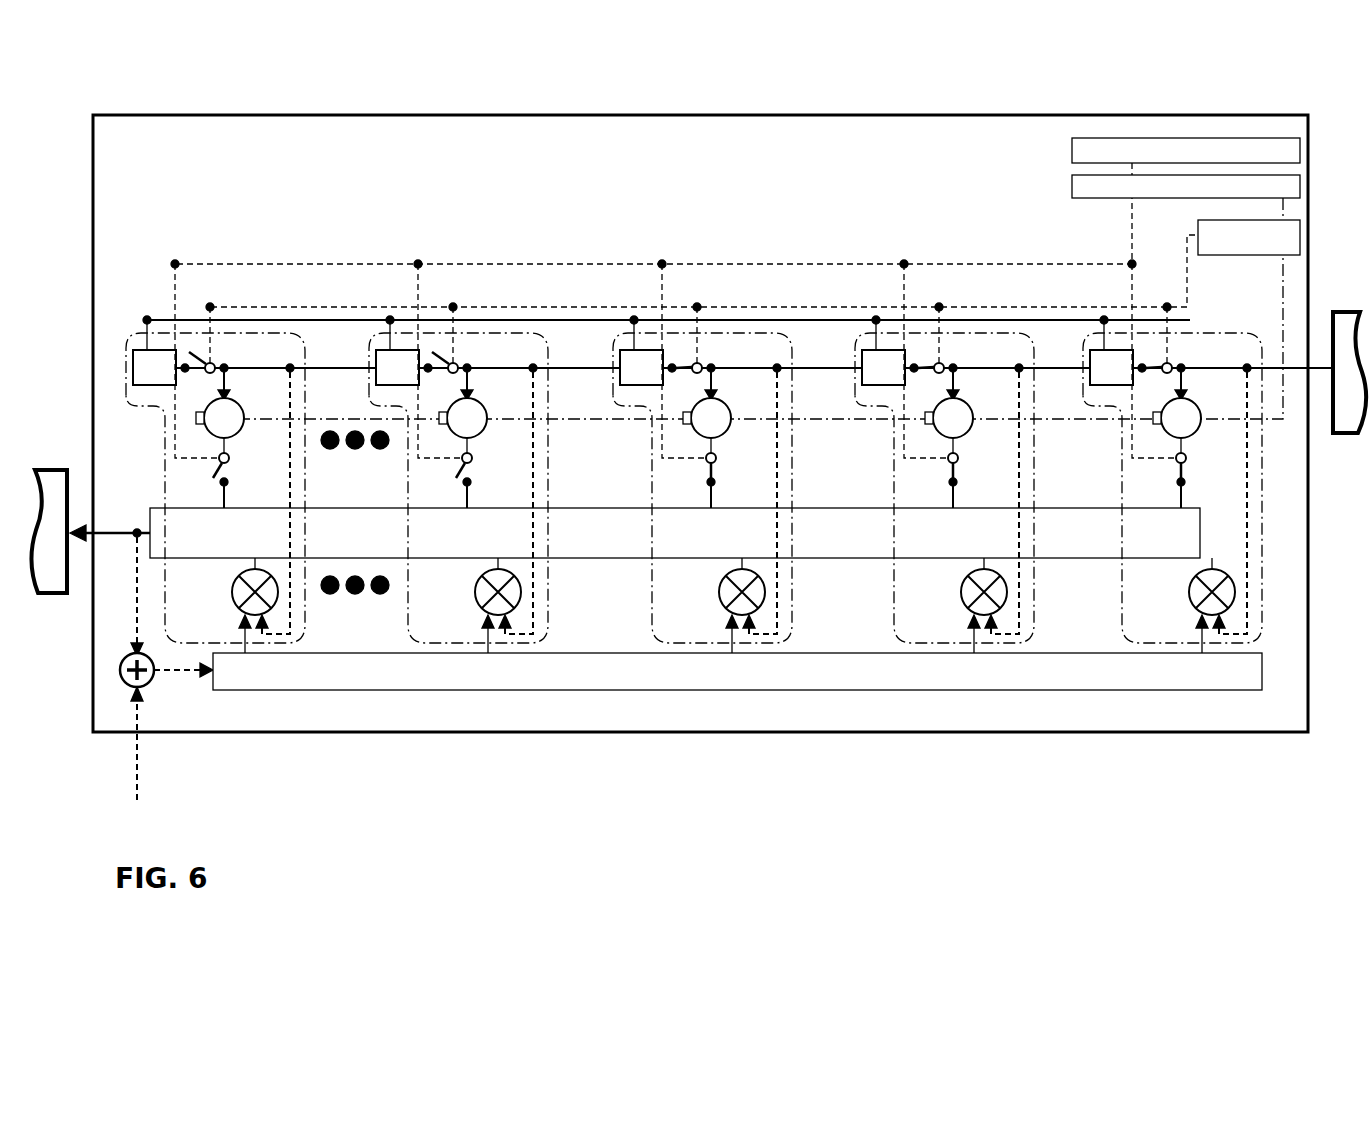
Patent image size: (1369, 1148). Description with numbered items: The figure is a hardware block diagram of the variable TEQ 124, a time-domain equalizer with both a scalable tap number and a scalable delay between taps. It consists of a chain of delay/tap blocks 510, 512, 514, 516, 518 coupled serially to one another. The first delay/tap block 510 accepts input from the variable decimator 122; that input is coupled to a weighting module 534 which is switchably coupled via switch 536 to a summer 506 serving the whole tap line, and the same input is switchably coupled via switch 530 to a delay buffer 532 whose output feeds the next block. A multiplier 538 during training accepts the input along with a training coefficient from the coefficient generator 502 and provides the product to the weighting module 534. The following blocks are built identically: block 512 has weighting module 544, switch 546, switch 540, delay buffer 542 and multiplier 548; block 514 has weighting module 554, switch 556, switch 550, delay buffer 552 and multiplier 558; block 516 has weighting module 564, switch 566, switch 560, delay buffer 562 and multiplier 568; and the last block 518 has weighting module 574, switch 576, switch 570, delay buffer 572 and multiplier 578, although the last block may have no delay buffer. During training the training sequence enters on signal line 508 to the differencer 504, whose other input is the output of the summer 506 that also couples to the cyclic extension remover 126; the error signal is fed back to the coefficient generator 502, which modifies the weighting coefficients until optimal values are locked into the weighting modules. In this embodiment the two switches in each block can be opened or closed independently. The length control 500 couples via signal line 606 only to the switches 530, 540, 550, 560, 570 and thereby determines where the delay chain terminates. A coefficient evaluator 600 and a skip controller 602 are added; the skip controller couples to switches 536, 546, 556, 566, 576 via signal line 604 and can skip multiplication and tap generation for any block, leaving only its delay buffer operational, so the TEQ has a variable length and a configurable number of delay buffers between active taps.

The variable decimator 122 is at (1345, 436).
The variable TEQ 124 is at (93, 150).
The cyclic extension remover 126 is at (45, 597).
The length control module 500 is at (1198, 228).
The coefficient generator 502 is at (480, 690).
The differencer 504 is at (125, 655).
The summer 506 is at (150, 512).
The signal line 508 is at (145, 742).
The delay/tap block 510 is at (1262, 340).
The delay/tap block 512 is at (1037, 352).
The delay/tap block 514 is at (794, 352).
The delay/tap block 516 is at (552, 352).
The delay/tap block 518 is at (312, 352).
The switch 530 is at (1173, 362).
The delay buffer 532 is at (1100, 345).
The weighting module 534 is at (1199, 410).
The switch 536 is at (1174, 461).
The multiplier 538 is at (1201, 600).
The switch 540 is at (945, 362).
The delay buffer 542 is at (872, 345).
The weighting module 544 is at (971, 410).
The switch 546 is at (946, 461).
The multiplier 548 is at (971, 600).
The switch 550 is at (703, 362).
The delay buffer 552 is at (630, 345).
The weighting module 554 is at (744, 396).
The switch 556 is at (704, 461).
The multiplier 558 is at (729, 600).
The switch 560 is at (459, 362).
The delay buffer 562 is at (410, 345).
The weighting module 564 is at (500, 396).
The switch 566 is at (460, 461).
The multiplier 568 is at (485, 600).
The switch 570 is at (216, 362).
The delay buffer 572 is at (150, 345).
The weighting module 574 is at (258, 396).
The switch 576 is at (218, 461).
The multiplier 578 is at (243, 600).
The coefficient evaluator 600 is at (1072, 185).
The skip controller 602 is at (1072, 150).
The signal line 604 is at (726, 262).
The signal line 606 is at (786, 305).